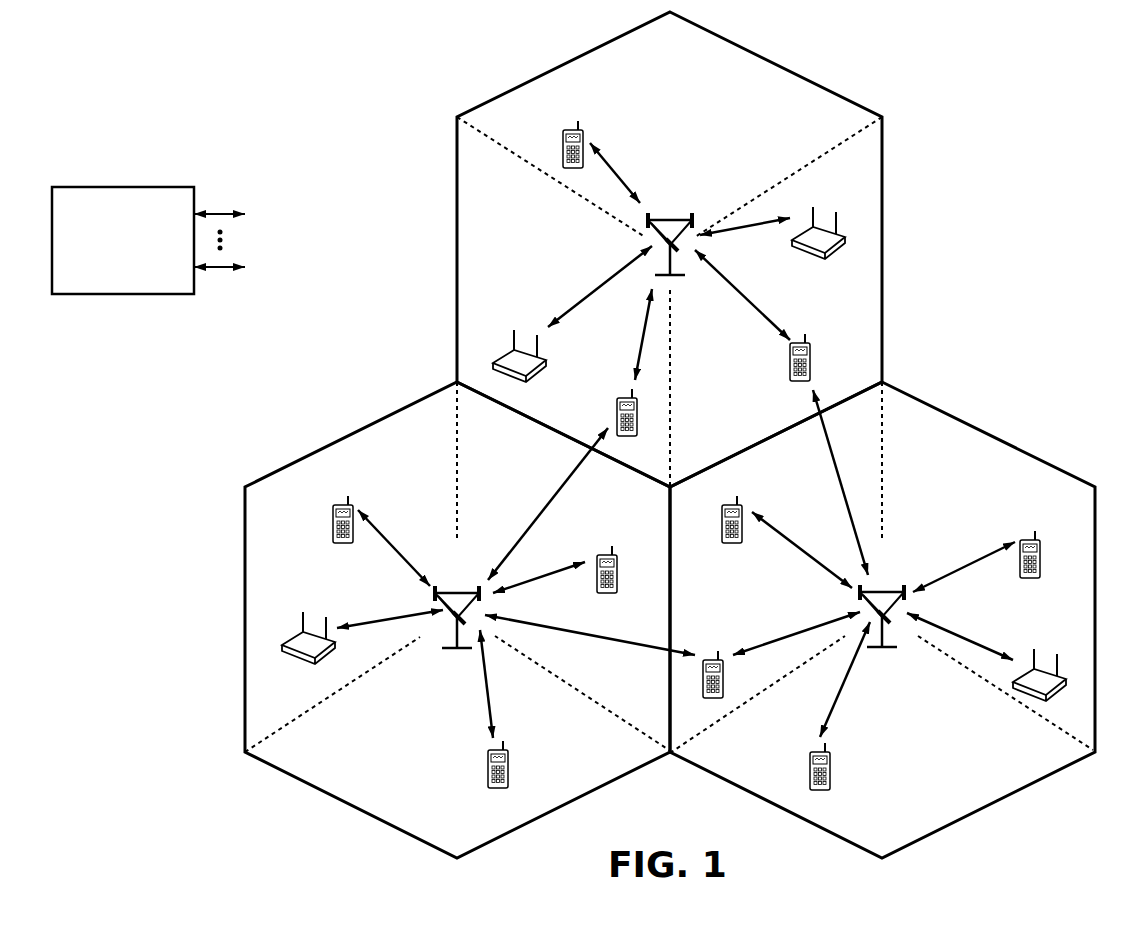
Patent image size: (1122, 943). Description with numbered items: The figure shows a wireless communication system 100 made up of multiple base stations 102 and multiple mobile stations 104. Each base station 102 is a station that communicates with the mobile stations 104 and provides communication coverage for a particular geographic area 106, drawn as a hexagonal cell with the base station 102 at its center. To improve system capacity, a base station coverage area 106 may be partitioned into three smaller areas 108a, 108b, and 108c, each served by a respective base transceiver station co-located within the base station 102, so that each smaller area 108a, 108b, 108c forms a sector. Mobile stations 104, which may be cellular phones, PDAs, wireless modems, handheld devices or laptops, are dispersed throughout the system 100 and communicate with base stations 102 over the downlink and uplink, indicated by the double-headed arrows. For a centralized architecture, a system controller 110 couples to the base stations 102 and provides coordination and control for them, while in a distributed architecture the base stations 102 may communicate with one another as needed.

The wireless communication system 100 is at (1030, 74).
The base station 102 is at (666, 213).
The mobile station 104 is at (565, 143).
The coverage area 106 is at (783, 63).
The smaller area 108a is at (650, 67).
The smaller area 108b is at (472, 219).
The smaller area 108c is at (720, 419).
The system controller 110 is at (118, 187).